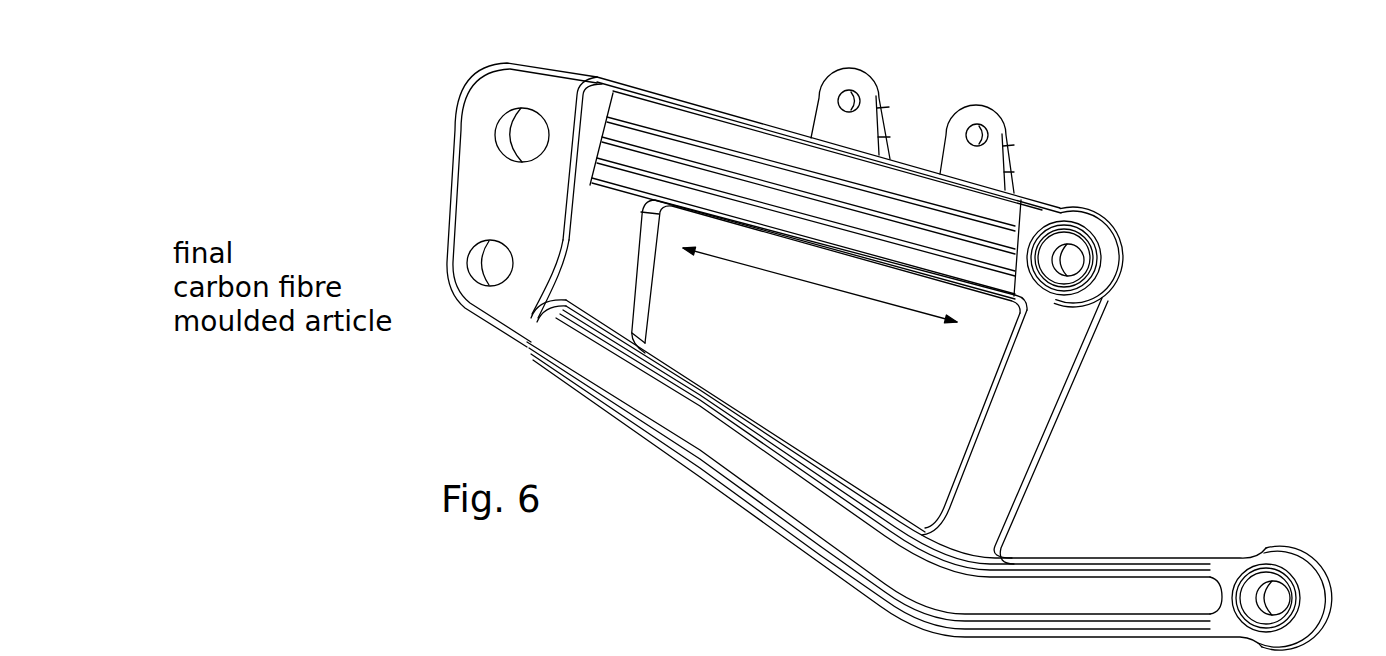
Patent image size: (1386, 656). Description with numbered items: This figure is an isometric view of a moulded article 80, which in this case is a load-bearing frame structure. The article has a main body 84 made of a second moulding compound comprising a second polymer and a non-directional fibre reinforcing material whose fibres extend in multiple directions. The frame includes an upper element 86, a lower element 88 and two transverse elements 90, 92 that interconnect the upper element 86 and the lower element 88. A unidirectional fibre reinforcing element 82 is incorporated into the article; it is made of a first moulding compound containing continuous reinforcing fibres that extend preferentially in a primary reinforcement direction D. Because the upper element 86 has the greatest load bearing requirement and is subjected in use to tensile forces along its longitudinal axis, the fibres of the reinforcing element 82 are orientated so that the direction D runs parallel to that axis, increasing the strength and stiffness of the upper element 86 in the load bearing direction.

The moulded article 80 is at (1158, 196).
The unidirectional fibre reinforcing element 82 is at (741, 128).
The main body 84 is at (1020, 432).
The upper element 86 is at (927, 168).
The lower element 88 is at (716, 488).
The transverse element 90 is at (460, 180).
The transverse element 92 is at (1068, 376).
The primary reinforcement direction D is at (808, 284).